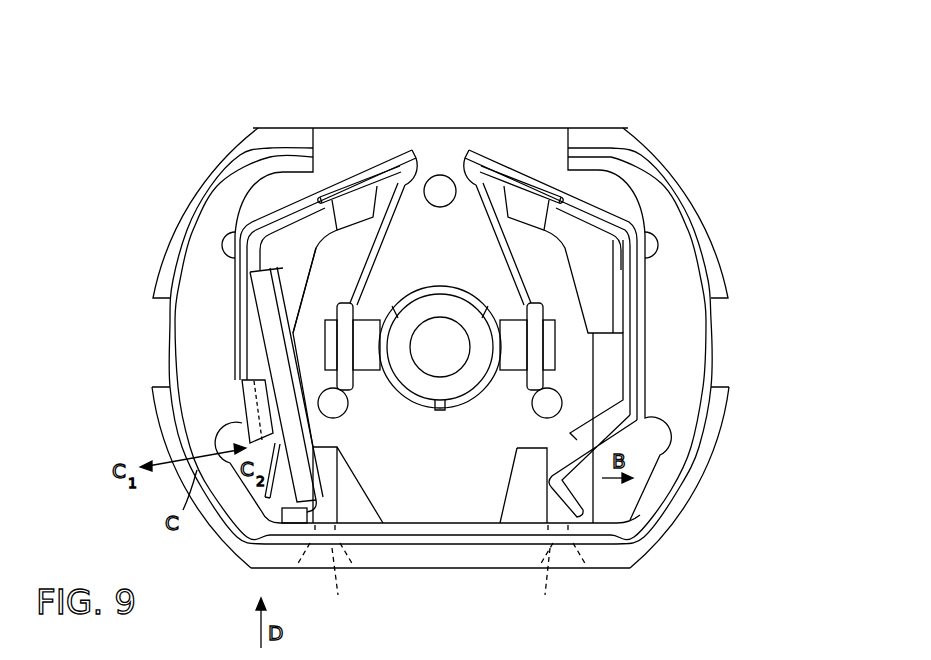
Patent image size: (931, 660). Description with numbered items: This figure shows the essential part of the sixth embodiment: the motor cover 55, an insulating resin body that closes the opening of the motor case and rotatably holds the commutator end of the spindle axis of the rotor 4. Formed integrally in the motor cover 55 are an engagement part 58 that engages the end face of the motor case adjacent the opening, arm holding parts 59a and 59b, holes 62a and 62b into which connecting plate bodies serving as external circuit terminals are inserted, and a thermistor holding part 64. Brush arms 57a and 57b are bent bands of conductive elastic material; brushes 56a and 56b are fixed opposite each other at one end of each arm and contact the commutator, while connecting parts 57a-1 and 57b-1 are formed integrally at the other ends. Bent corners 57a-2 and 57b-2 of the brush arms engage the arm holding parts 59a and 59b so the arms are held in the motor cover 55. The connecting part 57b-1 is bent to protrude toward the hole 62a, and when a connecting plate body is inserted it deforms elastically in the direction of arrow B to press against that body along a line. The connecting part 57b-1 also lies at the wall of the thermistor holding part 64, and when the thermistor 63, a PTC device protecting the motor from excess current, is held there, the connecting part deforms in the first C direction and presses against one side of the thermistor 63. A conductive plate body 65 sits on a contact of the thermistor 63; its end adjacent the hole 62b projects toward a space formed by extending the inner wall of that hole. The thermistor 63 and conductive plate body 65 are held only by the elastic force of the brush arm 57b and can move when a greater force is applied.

The rotor 4 is at (440, 412).
The motor cover 55 is at (277, 122).
The brush 56a is at (518, 378).
The brush 56b is at (362, 378).
The brush arm 57a is at (637, 350).
The connecting part 57a-1 is at (560, 483).
The bent corner 57a-2 is at (637, 235).
The brush arm 57b is at (240, 333).
The connecting part 57b-1 is at (245, 413).
The bent corner 57b-2 is at (240, 233).
The engagement part 58 is at (632, 178).
The arm holding part 59a is at (633, 216).
The arm holding part 59b is at (247, 217).
The hole 62a is at (561, 572).
The hole 62b is at (338, 572).
The thermistor 63 is at (287, 507).
The thermistor holding part 64 is at (246, 372).
The conductive plate body 65 is at (308, 312).